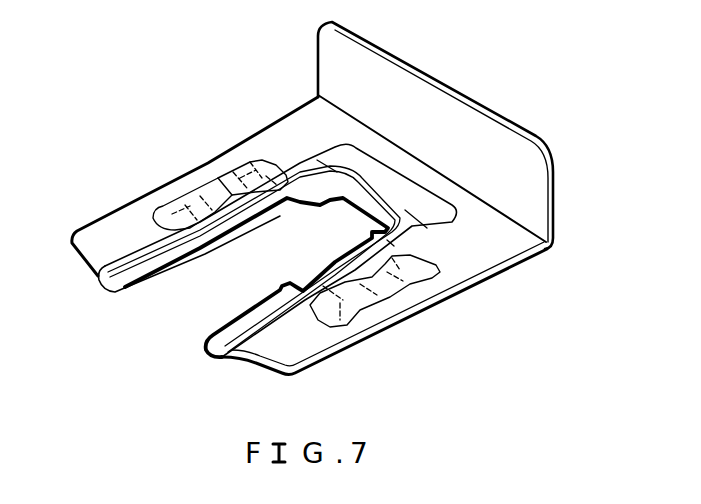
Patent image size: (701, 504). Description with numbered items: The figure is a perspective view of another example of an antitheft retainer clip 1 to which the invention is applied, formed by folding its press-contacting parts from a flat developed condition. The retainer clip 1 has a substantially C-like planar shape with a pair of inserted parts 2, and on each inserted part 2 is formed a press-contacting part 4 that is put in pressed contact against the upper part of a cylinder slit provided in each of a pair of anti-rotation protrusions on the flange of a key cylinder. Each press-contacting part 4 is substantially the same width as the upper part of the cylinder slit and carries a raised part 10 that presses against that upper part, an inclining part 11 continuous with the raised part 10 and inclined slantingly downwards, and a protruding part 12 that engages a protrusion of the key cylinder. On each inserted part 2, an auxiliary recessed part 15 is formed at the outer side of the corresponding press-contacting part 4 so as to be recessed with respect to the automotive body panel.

The retainer clip 1 is at (481, 85).
The inserted part 2 is at (444, 309).
The press-contacting part 4 is at (160, 258).
The raised part 10 is at (255, 190).
The inclining part 11 is at (138, 249).
The protruding part 12 is at (181, 224).
The auxiliary recessed part 15 is at (365, 307).